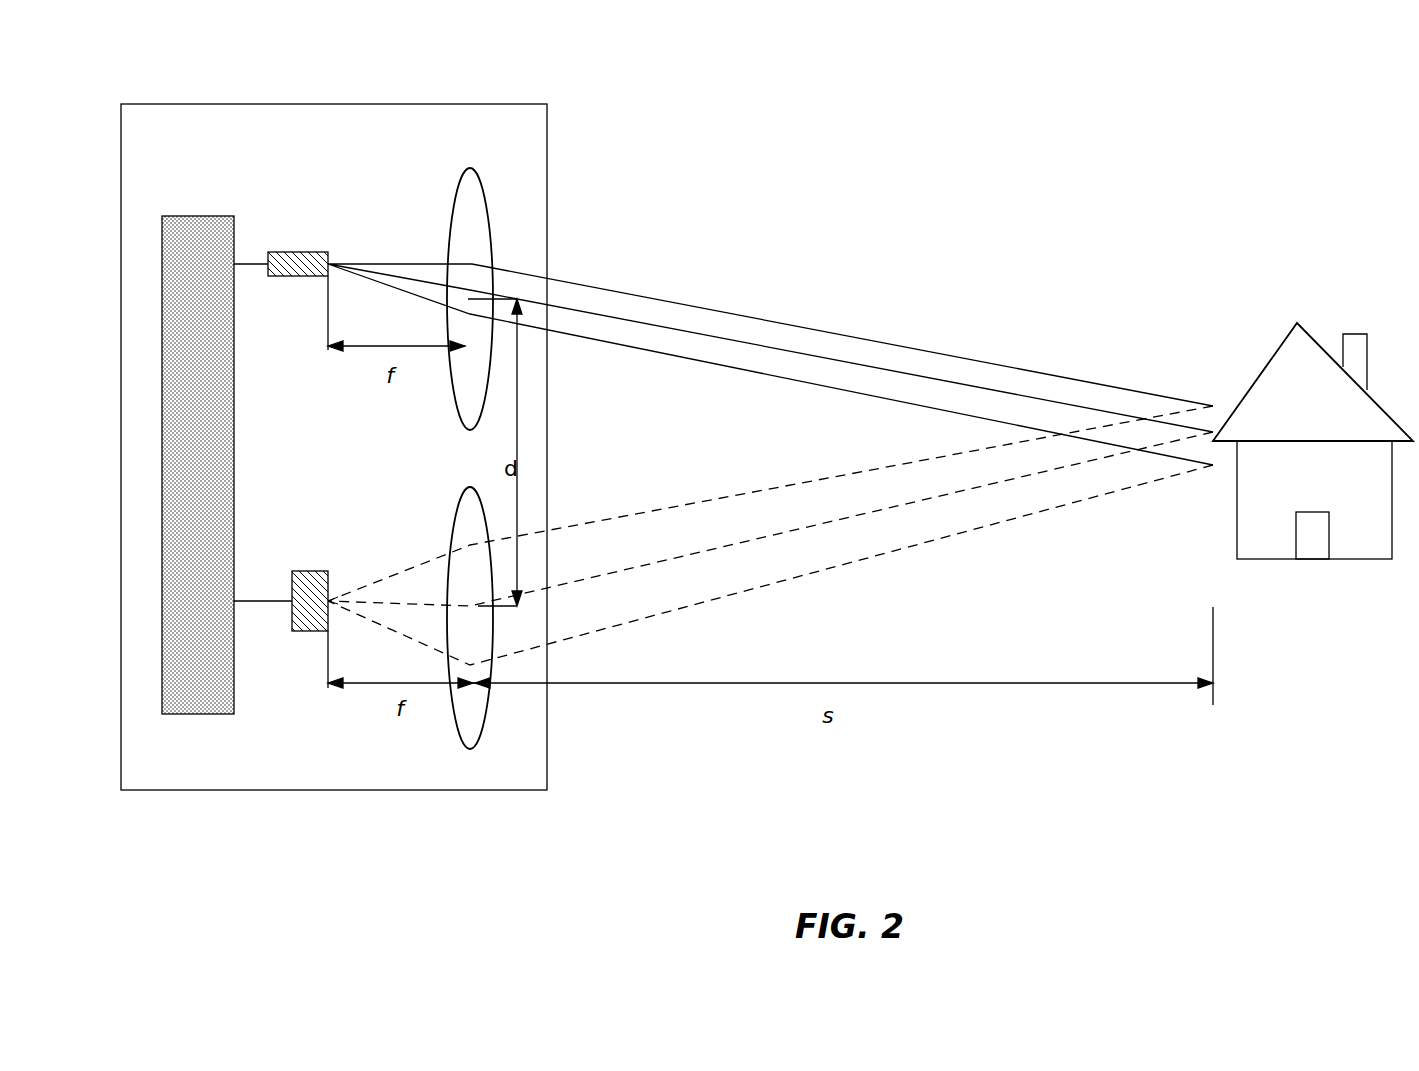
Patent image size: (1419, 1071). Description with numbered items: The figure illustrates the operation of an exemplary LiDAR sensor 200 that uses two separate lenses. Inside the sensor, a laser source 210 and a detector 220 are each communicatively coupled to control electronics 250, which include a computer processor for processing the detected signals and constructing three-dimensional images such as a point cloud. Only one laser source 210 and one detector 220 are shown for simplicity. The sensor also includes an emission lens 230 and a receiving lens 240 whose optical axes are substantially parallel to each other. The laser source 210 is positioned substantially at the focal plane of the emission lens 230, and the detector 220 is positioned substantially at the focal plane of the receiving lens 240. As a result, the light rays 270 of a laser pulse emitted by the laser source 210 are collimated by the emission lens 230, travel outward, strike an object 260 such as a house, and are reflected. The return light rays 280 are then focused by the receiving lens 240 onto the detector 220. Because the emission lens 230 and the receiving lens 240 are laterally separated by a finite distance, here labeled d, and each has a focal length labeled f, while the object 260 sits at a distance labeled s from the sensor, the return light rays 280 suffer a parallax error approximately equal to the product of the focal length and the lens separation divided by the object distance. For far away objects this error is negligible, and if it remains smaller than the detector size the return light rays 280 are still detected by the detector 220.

The LiDAR sensor 200 is at (365, 104).
The laser source 210 is at (300, 252).
The detector 220 is at (312, 571).
The emission lens 230 is at (448, 213).
The receiving lens 240 is at (448, 514).
The control electronics 250 is at (205, 216).
The object 260 is at (1280, 352).
The light rays 270 is at (880, 342).
The return light rays 280 is at (750, 493).